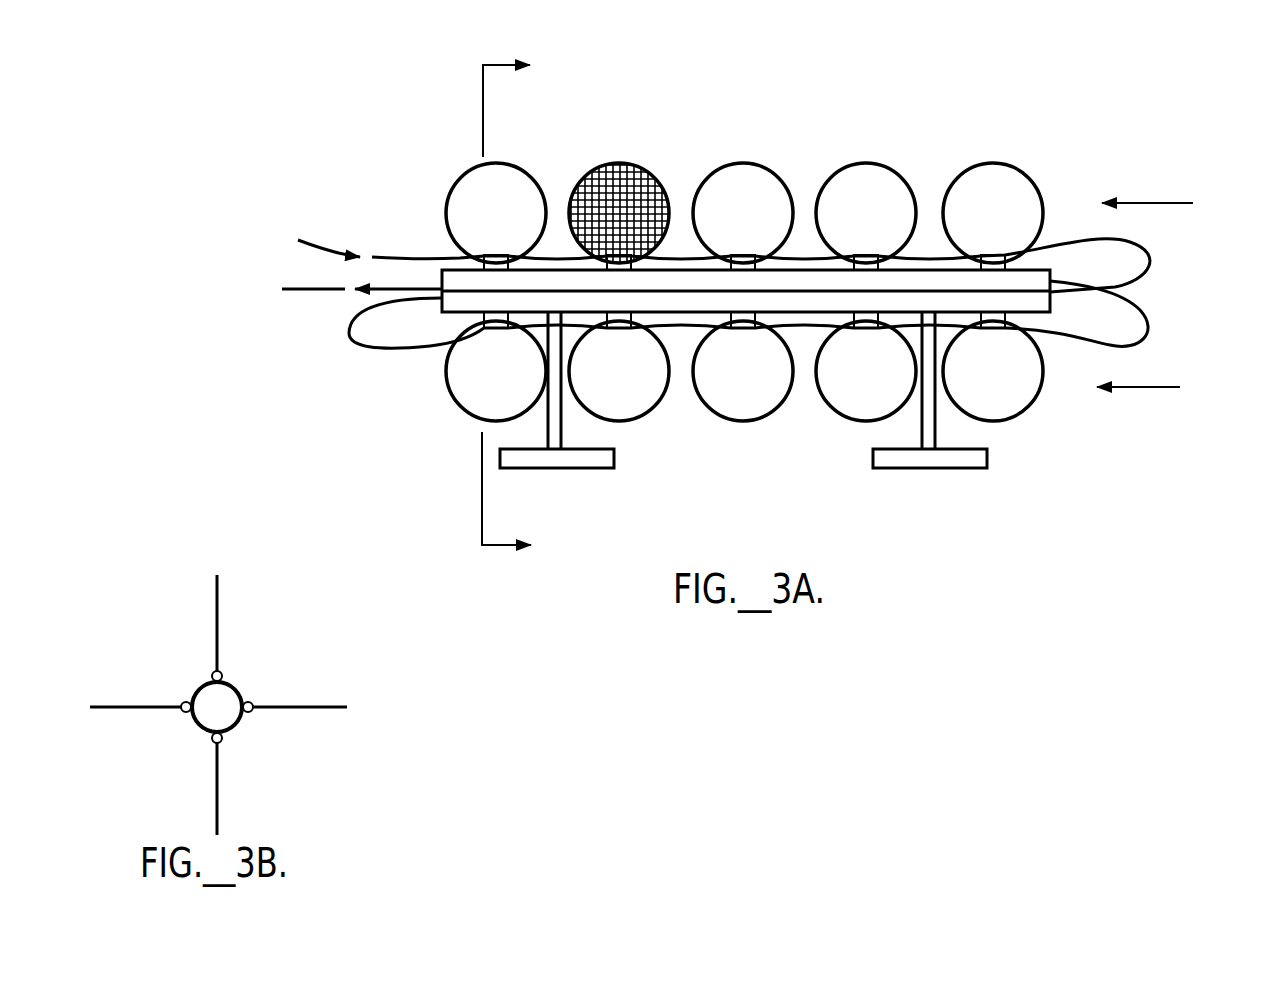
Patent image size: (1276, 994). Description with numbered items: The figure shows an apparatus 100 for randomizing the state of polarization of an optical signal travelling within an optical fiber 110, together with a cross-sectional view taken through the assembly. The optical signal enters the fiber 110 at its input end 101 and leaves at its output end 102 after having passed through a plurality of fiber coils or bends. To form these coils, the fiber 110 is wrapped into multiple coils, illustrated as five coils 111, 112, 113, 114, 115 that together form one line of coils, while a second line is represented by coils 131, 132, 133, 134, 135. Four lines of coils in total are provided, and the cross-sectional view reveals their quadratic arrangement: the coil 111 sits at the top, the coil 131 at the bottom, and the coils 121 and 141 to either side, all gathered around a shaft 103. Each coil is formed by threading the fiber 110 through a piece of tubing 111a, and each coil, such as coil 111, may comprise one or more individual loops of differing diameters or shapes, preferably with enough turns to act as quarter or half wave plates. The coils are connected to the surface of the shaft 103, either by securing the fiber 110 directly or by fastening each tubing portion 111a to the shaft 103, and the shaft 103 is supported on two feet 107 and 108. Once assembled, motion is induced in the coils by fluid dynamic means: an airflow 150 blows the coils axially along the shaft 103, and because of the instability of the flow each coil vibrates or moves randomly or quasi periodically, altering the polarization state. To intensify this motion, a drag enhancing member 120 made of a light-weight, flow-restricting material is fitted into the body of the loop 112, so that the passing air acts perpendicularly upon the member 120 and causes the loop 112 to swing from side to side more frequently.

In FIG. 3A, the sensor assembly 100 is at (1005, 58).
In FIG. 3A, the input end 101 is at (322, 242).
In FIG. 3A, the output end 102 is at (317, 291).
In FIG. 3A, the shaft 103 is at (465, 305).
In FIG. 3A, the foot 107 is at (577, 468).
In FIG. 3A, the foot 108 is at (947, 468).
In FIG. 3A, the optical fiber 110 is at (1148, 276).
In FIG. 3A, the coil 111 is at (513, 165).
In FIG. 3B, the coil 111 is at (219, 613).
In FIG. 3A, the tubing 111a is at (497, 254).
In FIG. 3A, the coil 112 is at (623, 163).
In FIG. 3A, the coil 113 is at (786, 183).
In FIG. 3A, the coil 114 is at (870, 163).
In FIG. 3A, the coil 115 is at (1007, 163).
In FIG. 3A, the drag enhancing member 120 is at (640, 190).
In FIG. 3B, the coil 121 is at (303, 707).
In FIG. 3A, the coil 131 is at (462, 412).
In FIG. 3B, the coil 131 is at (219, 787).
In FIG. 3A, the coil 132 is at (625, 422).
In FIG. 3A, the coil 133 is at (735, 422).
In FIG. 3A, the coil 134 is at (855, 417).
In FIG. 3A, the coil 135 is at (1010, 417).
In FIG. 3B, the coil 141 is at (138, 707).
In FIG. 3A, the airflow 150 is at (1118, 172).